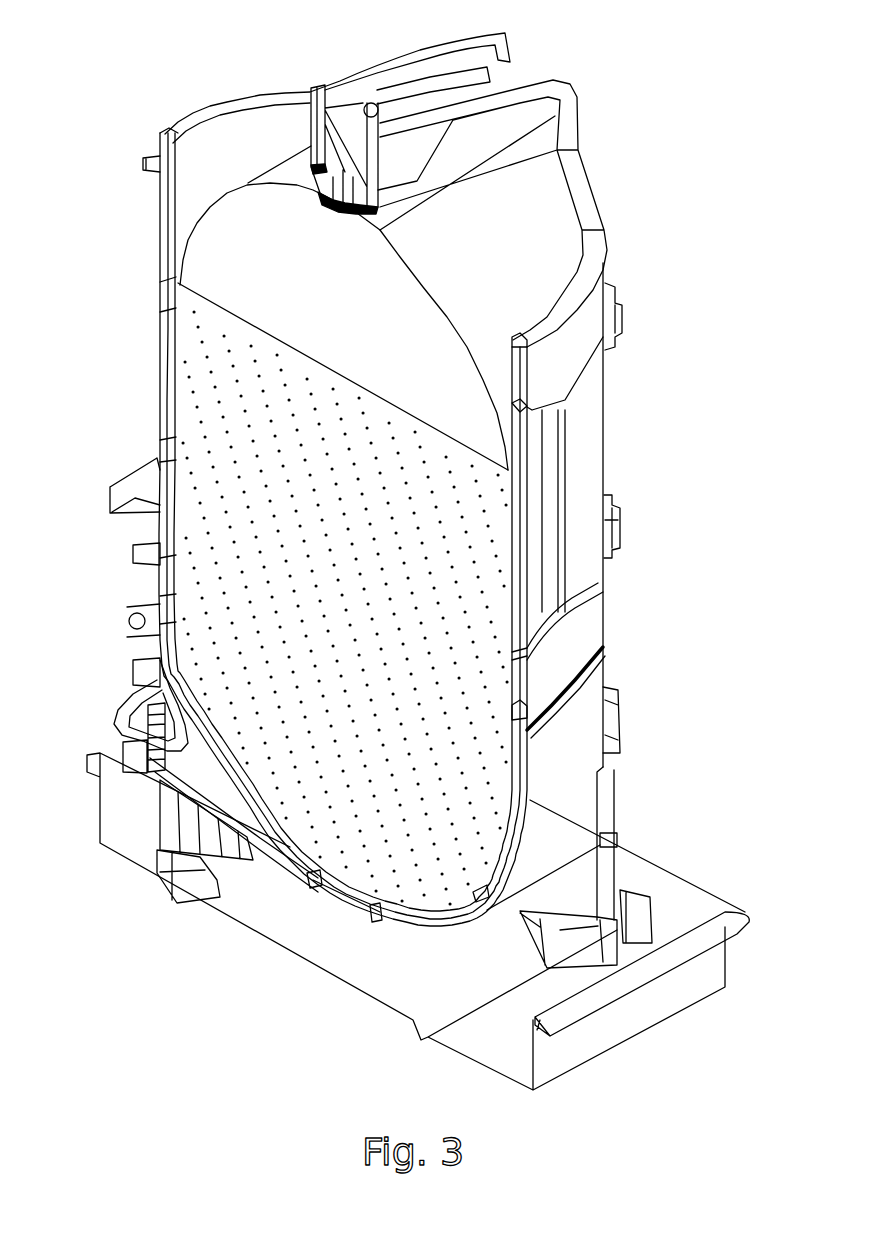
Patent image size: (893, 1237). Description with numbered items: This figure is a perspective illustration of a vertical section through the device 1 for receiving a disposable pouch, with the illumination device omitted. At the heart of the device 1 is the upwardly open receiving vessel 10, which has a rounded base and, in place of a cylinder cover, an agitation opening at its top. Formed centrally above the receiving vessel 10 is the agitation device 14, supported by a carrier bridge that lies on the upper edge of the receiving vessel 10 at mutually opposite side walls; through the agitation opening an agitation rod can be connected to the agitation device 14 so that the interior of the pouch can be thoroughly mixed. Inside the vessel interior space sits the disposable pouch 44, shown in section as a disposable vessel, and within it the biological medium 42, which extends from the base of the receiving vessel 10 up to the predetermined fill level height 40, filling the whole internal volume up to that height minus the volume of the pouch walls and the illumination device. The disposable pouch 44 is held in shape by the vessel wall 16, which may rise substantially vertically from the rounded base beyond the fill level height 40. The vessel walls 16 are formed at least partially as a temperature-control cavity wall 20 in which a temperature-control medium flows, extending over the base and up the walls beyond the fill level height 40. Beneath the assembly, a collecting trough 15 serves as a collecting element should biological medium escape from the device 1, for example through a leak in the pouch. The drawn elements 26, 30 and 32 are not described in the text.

The device 1 is at (757, 445).
The receiving vessel 10 is at (583, 775).
The agitation device 14 is at (340, 130).
The collecting trough 15 is at (710, 967).
The vessel wall 16 is at (167, 405).
The temperature-control cavity wall 20 is at (160, 513).
The pipe connection 26 is at (123, 713).
The side panel 30 is at (587, 630).
The panel plate 32 is at (530, 420).
The fill level height 40 is at (210, 300).
The biological medium 42 is at (290, 357).
The disposable pouch 44 is at (553, 200).